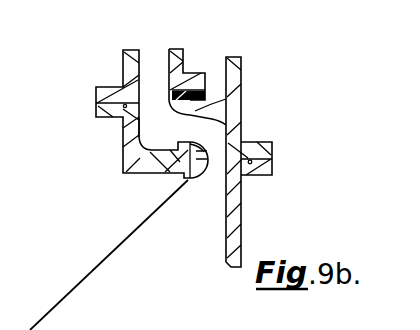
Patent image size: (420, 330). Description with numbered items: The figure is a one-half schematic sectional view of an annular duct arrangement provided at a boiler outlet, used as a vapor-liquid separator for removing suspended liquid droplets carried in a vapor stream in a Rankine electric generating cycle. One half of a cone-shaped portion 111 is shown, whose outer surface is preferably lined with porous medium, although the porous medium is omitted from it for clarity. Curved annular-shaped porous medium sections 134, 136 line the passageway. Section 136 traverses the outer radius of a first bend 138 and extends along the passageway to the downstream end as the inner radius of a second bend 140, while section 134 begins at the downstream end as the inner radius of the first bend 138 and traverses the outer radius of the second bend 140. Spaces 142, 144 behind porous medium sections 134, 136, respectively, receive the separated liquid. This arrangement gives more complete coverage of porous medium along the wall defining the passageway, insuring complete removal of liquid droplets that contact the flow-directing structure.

The cone-shaped portion 111 is at (122, 242).
The porous medium section 134 is at (141, 150).
The porous medium section 136 is at (195, 111).
The first bend 138 is at (212, 121).
The second bend 140 is at (139, 122).
The space 142 is at (158, 152).
The space 144 is at (203, 93).